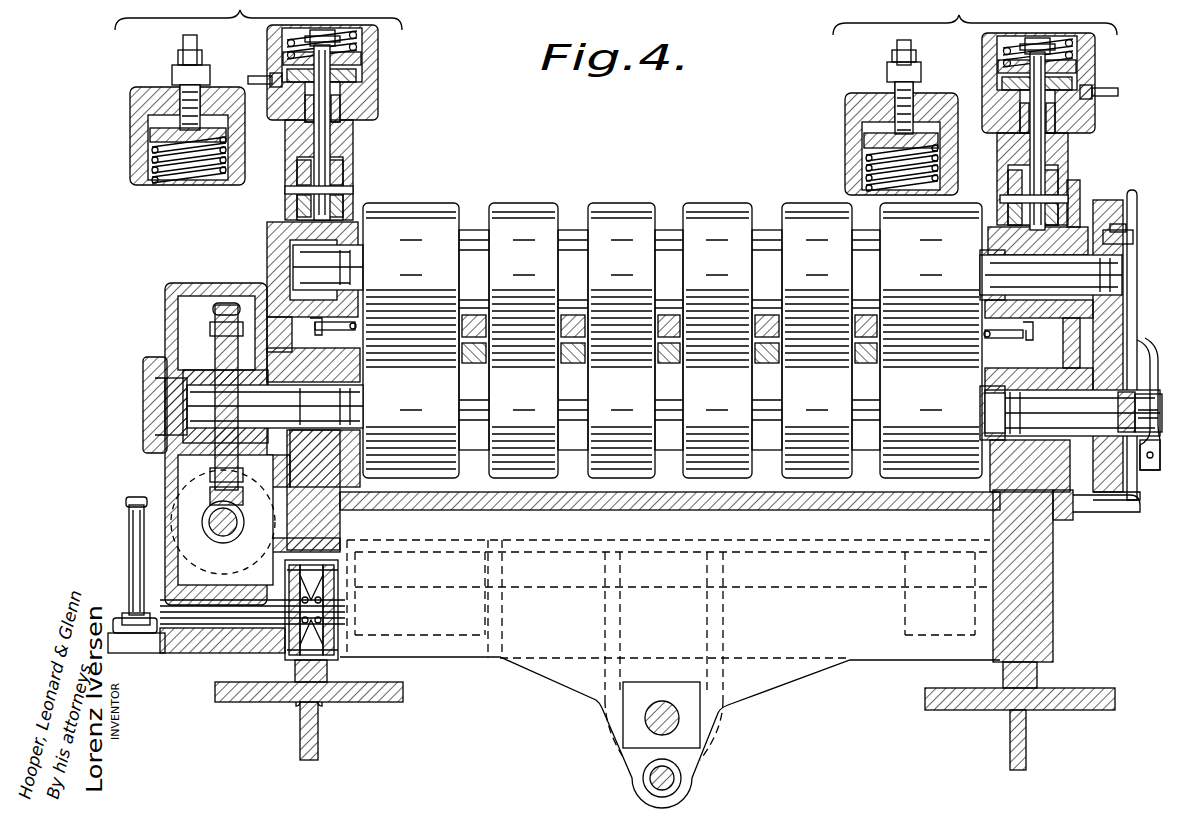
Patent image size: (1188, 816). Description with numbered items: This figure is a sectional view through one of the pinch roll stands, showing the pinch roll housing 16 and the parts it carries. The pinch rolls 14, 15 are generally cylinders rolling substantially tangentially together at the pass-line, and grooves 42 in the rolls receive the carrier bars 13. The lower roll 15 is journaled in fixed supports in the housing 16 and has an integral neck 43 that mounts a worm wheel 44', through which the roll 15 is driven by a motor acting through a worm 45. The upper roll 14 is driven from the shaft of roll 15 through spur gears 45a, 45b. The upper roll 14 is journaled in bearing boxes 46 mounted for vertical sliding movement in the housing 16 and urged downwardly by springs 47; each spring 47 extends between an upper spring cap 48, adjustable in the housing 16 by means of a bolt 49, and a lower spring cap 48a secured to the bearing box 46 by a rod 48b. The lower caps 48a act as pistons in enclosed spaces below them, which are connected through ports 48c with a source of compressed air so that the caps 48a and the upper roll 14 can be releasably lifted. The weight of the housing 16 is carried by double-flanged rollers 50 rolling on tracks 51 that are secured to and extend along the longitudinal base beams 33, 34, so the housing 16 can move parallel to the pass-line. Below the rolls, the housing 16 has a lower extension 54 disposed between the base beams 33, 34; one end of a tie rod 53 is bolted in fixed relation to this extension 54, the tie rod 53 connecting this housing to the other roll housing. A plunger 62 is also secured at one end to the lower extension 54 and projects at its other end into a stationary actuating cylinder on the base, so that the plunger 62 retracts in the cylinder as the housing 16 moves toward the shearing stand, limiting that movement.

The carrier bar 13 is at (573, 340).
The upper pinch roll 14 is at (702, 212).
The lower pinch roll 15 is at (722, 474).
The pinch roll housing 16 is at (283, 212).
The longitudinal base beam 33 is at (302, 734).
The longitudinal base beam 34 is at (1026, 744).
The groove 42 is at (768, 212).
The integral neck 43 is at (215, 395).
The worm wheel 44' is at (191, 438).
The worm 45 is at (210, 525).
The spur gear 45a is at (1120, 242).
The spur gear 45b is at (1110, 466).
The bearing box 46 is at (313, 318).
The spring 47 is at (190, 176).
The upper spring cap 48 is at (170, 128).
The lower spring cap 48a is at (358, 60).
The rod 48b is at (325, 150).
The port 48c is at (275, 92).
The bolt 49 is at (215, 108).
The double-flanged roller 50 is at (288, 652).
The track 51 is at (330, 676).
The tie rod 53 is at (680, 778).
The lower extension 54 is at (575, 683).
The plunger 62 is at (680, 718).